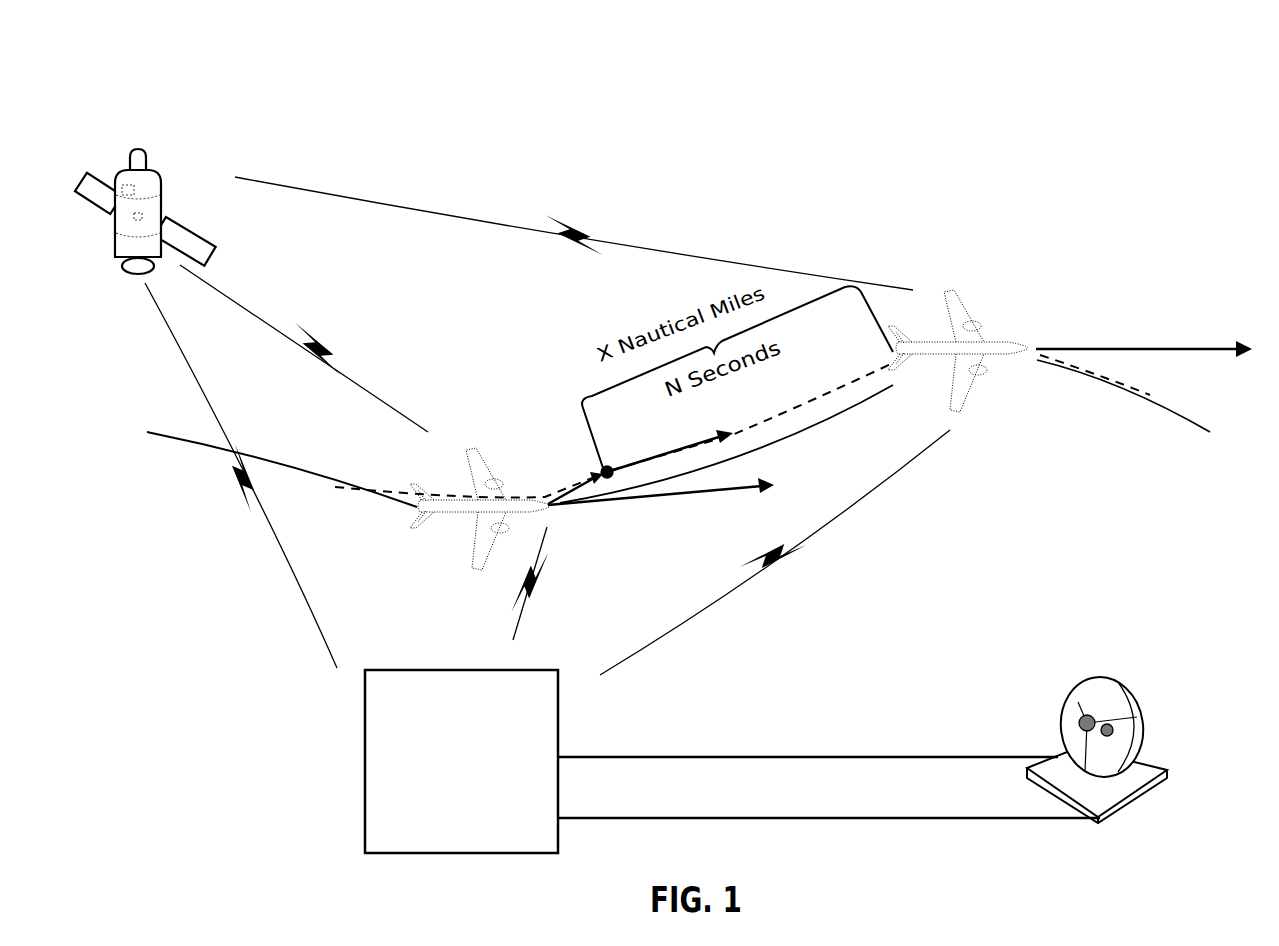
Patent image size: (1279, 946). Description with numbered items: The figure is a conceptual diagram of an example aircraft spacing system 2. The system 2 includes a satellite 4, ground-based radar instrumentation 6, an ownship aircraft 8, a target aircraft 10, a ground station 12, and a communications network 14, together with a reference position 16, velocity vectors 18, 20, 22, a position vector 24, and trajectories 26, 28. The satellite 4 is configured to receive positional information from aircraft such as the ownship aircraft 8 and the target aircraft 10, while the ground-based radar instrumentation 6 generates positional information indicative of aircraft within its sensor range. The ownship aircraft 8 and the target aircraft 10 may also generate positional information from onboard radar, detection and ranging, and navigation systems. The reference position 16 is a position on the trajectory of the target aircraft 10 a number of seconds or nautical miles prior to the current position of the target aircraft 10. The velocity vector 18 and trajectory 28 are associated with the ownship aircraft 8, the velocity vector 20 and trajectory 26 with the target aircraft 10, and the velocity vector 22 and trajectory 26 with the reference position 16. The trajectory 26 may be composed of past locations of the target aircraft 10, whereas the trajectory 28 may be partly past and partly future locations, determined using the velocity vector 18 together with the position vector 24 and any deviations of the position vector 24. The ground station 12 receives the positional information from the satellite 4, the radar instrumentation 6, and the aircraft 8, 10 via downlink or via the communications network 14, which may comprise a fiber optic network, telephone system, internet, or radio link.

The aircraft spacing system 2 is at (168, 78).
The satellite 4 is at (163, 188).
The ground-based radar instrumentation 6 is at (1140, 718).
The ownship aircraft 8 is at (427, 537).
The target aircraft 10 is at (1025, 343).
The ground station 12 is at (461, 761).
The communications network 14 is at (829, 787).
The reference position 16 is at (605, 488).
The velocity vector 18 is at (672, 498).
The velocity vector 20 is at (1155, 347).
The velocity vector 22 is at (677, 450).
The position vector 24 is at (577, 480).
The trajectory 26 is at (447, 497).
The trajectory 28 is at (785, 440).